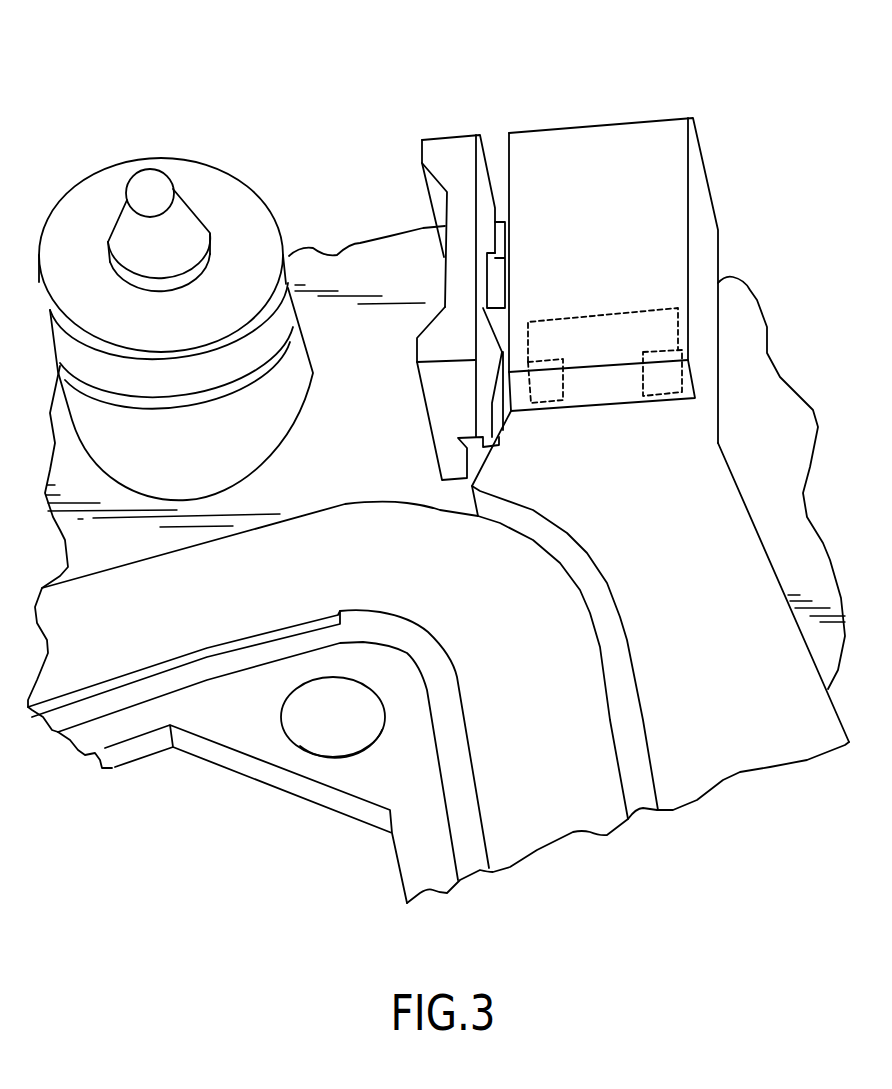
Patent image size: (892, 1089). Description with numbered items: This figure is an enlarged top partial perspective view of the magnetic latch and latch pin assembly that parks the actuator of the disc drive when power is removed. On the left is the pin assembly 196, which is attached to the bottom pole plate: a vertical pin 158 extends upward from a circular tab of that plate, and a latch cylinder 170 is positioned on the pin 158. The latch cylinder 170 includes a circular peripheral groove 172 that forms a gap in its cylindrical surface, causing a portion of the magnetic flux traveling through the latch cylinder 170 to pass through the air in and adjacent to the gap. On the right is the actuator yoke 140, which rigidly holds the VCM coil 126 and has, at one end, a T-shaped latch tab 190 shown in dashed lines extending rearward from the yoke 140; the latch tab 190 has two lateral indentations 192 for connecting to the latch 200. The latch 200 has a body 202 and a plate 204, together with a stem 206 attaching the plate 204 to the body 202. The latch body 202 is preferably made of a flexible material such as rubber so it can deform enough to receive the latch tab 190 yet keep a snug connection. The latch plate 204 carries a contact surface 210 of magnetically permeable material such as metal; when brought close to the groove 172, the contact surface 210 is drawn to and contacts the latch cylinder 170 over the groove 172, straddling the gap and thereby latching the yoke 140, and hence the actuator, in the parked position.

The VCM coil 126 is at (108, 690).
The yoke 140 is at (722, 480).
The pin 158 is at (183, 205).
The latch cylinder 170 is at (238, 205).
The circular peripheral groove 172 is at (93, 395).
The T-shaped latch tab 190 is at (617, 300).
The lateral indentations 192 is at (562, 386).
The pin assembly 196 is at (198, 271).
The latch 200 is at (575, 269).
The latch body 202 is at (600, 137).
The latch plate 204 is at (450, 143).
The stem 206 is at (497, 282).
The contact surface 210 is at (442, 270).